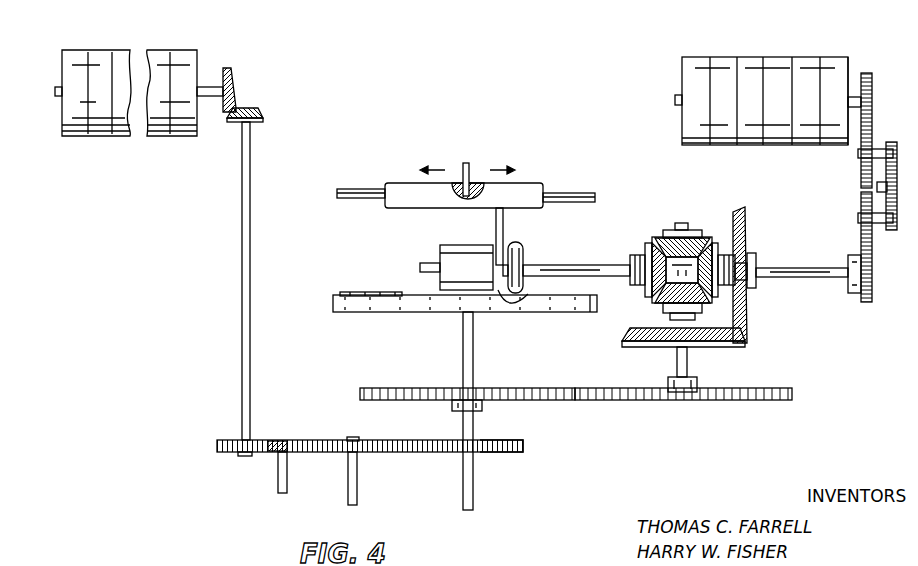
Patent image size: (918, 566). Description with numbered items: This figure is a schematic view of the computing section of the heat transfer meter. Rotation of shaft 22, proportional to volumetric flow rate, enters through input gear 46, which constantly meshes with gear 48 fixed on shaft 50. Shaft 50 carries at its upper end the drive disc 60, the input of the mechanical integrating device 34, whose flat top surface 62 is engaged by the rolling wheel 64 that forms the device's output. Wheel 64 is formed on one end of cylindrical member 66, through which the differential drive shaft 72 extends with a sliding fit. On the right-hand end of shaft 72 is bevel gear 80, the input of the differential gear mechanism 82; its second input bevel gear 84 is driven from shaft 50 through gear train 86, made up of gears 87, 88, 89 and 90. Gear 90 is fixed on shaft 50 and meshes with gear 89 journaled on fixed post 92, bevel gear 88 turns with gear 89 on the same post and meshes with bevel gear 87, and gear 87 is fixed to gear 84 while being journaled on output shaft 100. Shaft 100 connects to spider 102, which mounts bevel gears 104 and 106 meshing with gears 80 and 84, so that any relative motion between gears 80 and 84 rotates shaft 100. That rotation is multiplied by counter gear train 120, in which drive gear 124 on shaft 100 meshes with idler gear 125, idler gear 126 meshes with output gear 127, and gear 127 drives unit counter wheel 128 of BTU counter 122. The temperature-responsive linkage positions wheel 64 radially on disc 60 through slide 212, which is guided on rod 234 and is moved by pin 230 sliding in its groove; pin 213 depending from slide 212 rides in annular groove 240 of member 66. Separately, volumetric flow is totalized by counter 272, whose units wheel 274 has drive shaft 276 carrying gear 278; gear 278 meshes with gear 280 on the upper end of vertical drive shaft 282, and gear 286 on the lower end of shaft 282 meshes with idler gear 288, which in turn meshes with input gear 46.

The shaft 22 is at (357, 482).
The mechanical integrating device 34 is at (465, 288).
The input gear 46 is at (325, 440).
The gear 48 is at (502, 453).
The shaft 50 is at (475, 345).
The drive disc 60 is at (395, 312).
The flat top surface 62 is at (395, 293).
The wheel 64 is at (523, 260).
The cylindrical member 66 is at (462, 245).
The differential drive shaft 72 is at (593, 240).
The bevel gear 80 is at (643, 253).
The differential gear mechanism 82 is at (707, 234).
The second input bevel gear 84 is at (706, 305).
The gear train 86 is at (697, 403).
The bevel gear 87 is at (748, 215).
The bevel gear 88 is at (639, 348).
The gear 89 is at (758, 391).
The gear 90 is at (412, 385).
The post 92 is at (689, 366).
The output shaft 100 is at (822, 268).
The differential mechanism spider 102 is at (650, 295).
The bevel gear 104 is at (660, 230).
The bevel gear 106 is at (662, 312).
The counter gear train 120 is at (854, 187).
The BTU counter 122 is at (729, 57).
The drive gear 124 is at (873, 286).
The idler gear 125 is at (853, 210).
The idler gear 126 is at (872, 143).
The output gear 127 is at (873, 87).
The unit counter wheel 128 is at (842, 32).
The slide 212 is at (535, 187).
The cylindrical pin 213 is at (503, 227).
The cylindrical pin 230 is at (469, 177).
The cylindrical rod 234 is at (351, 190).
The annular groove 240 is at (523, 297).
The counter 272 is at (120, 137).
The units wheel 274 is at (182, 55).
The units wheel drive shaft 276 is at (212, 90).
The gear 278 is at (234, 79).
The gear 280 is at (262, 112).
The drive shaft 282 is at (250, 173).
The gear 286 is at (230, 454).
The idler gear 288 is at (272, 440).